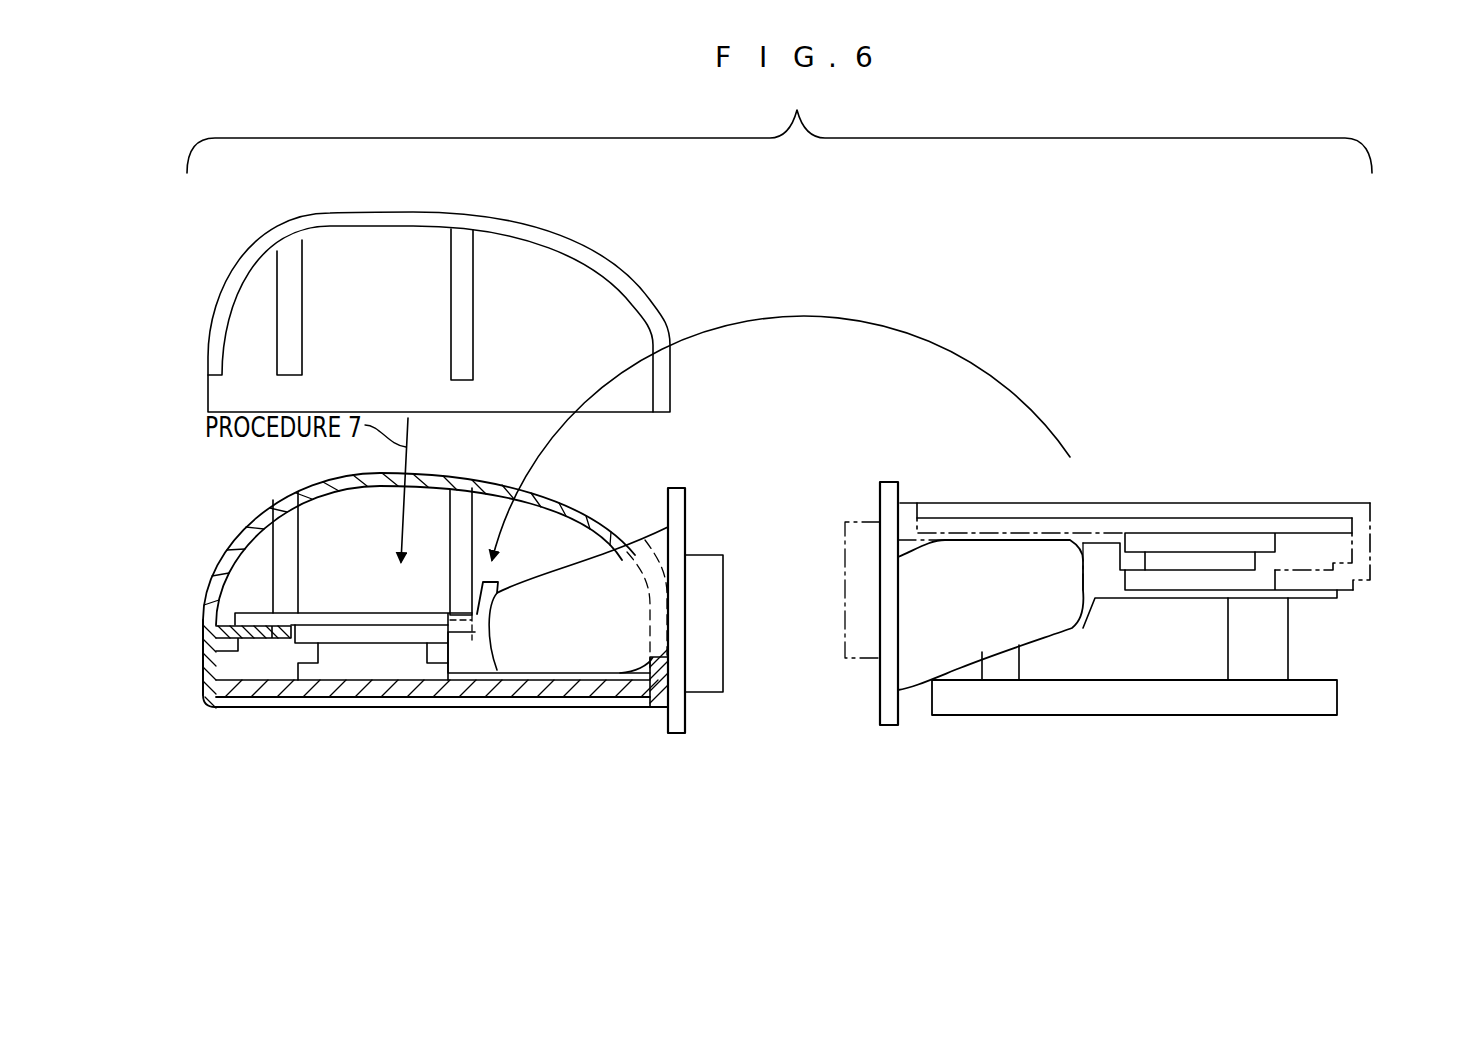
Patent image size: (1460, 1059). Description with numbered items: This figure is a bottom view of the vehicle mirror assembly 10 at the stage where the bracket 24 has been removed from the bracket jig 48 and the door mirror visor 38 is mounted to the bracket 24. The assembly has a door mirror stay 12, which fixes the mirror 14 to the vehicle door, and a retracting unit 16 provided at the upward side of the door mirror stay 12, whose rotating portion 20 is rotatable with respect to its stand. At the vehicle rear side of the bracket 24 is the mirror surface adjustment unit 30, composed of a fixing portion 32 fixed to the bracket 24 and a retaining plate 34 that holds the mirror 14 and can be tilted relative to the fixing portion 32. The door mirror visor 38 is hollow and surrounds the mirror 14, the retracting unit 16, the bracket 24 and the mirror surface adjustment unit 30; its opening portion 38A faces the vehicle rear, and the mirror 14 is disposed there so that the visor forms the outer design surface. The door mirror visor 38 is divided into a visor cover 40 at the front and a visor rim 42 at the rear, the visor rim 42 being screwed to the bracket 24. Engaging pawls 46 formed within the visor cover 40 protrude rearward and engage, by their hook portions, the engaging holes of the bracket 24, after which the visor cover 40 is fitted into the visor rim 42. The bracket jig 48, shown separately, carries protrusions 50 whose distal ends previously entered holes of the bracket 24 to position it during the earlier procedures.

The vehicle mirror assembly 10 is at (134, 546).
The door mirror stay 12 is at (688, 500).
The mirror 14 is at (608, 690).
The retracting unit 16 is at (468, 662).
The rotating portion 20 is at (485, 662).
The bracket 24 is at (496, 582).
The mirror surface adjustment unit 30 is at (333, 620).
The fixing portion 32 is at (378, 636).
The retaining plate 34 is at (411, 666).
The door mirror visor 38 is at (206, 550).
The opening portion 38A is at (224, 700).
The visor cover 40 is at (568, 240).
The visor rim 42 is at (203, 660).
The engaging pawl 46 is at (298, 550).
The bracket jig 48 is at (1342, 697).
The protrusion 50 is at (1019, 666).